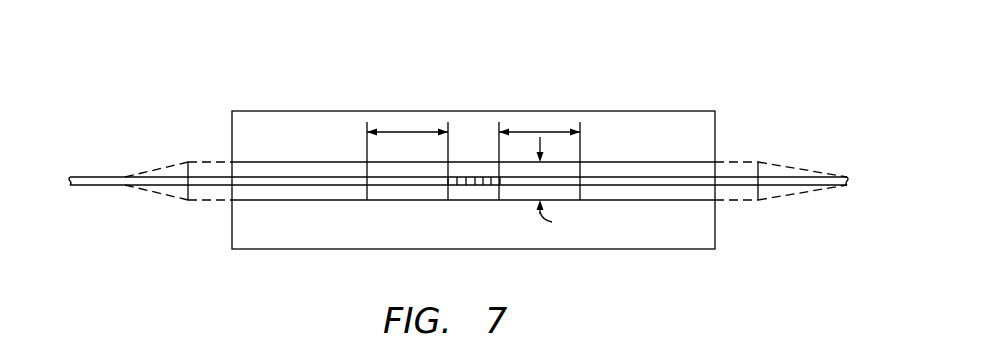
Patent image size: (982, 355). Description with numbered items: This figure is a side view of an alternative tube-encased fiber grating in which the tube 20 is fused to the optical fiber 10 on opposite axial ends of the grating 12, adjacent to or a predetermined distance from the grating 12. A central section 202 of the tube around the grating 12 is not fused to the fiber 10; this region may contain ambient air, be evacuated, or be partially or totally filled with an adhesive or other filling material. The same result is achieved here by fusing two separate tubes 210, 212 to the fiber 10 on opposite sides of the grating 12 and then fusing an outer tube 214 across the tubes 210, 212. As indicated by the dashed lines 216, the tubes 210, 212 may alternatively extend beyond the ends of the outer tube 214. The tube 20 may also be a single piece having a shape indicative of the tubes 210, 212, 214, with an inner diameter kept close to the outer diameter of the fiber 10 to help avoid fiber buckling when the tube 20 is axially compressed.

The tube 20 is at (458, 158).
The optical fiber 10 is at (287, 178).
The grating 12 is at (465, 176).
The central section 202 is at (422, 168).
The tube 210 is at (333, 197).
The tube 212 is at (647, 193).
The outer tube 214 is at (622, 118).
The dashed lines 216 is at (212, 160).